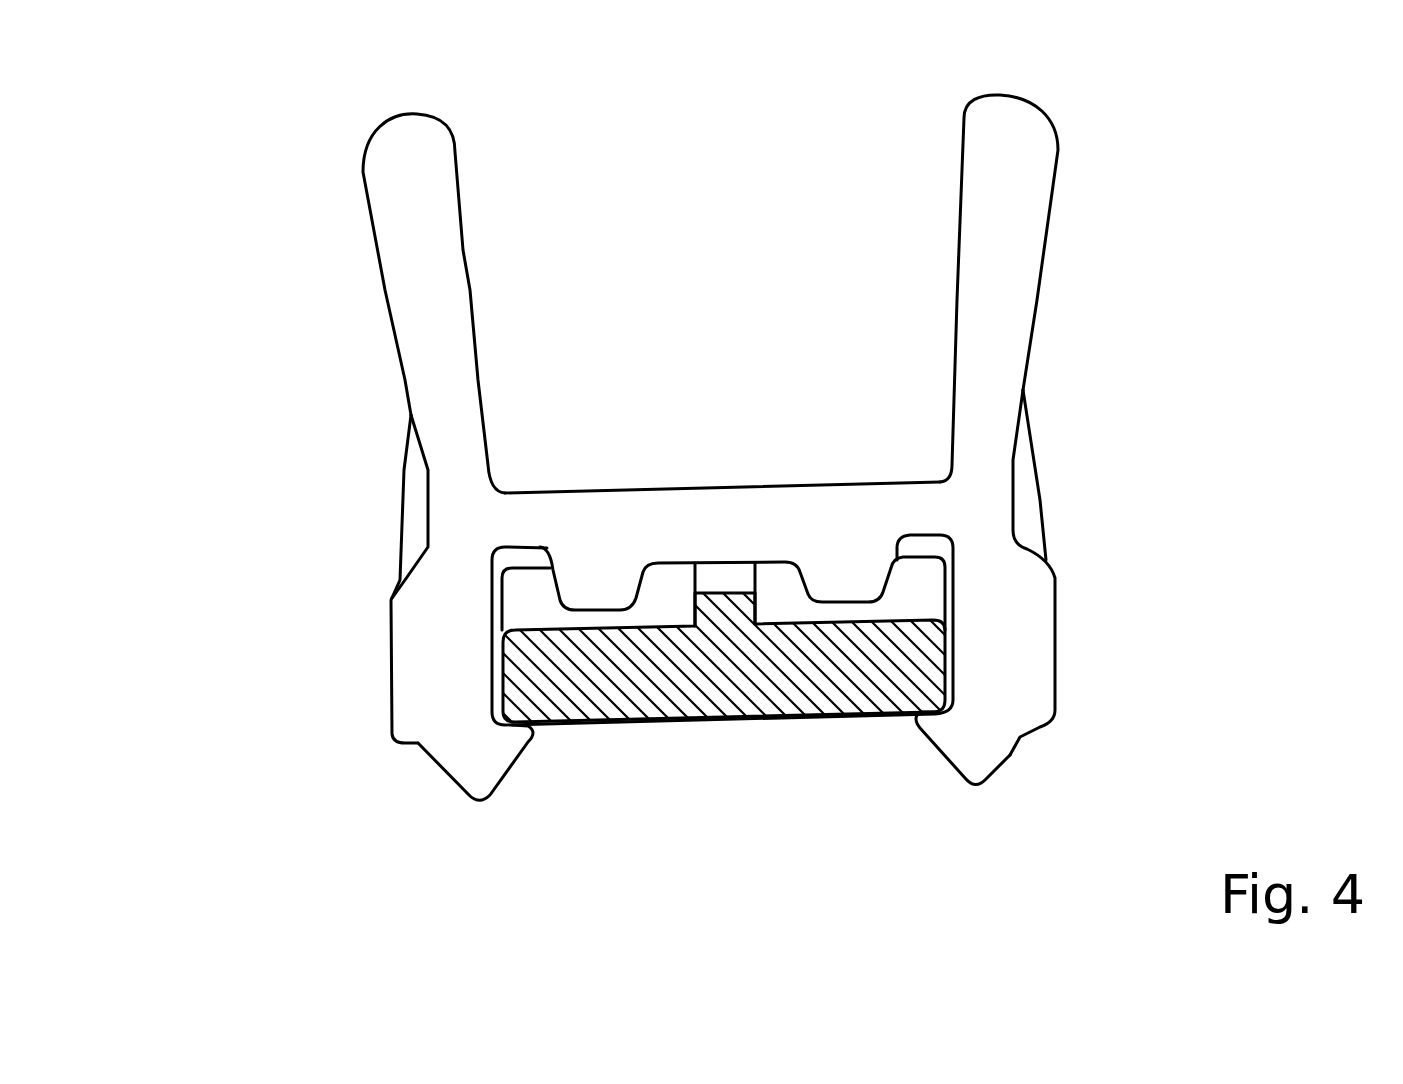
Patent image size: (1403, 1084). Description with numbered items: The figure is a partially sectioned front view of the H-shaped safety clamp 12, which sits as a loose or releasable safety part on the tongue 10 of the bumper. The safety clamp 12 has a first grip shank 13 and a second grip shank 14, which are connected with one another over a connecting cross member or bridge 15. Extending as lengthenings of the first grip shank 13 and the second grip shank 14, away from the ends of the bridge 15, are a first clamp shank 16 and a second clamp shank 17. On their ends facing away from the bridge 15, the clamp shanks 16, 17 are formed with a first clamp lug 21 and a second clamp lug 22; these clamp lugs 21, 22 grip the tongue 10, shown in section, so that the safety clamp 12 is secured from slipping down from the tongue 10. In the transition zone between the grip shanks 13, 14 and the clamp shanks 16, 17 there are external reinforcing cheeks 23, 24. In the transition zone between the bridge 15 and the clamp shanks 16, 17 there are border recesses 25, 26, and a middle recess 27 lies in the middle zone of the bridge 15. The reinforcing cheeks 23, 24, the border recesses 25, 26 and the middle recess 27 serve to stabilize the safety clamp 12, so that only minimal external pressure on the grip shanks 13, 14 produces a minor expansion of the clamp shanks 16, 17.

The tongue 10 is at (710, 673).
The safety clamp 12 is at (703, 392).
The first grip shank 13 is at (412, 210).
The second grip shank 14 is at (1025, 191).
The bridge 15 is at (880, 510).
The first clamp shank 16 is at (440, 636).
The second clamp shank 17 is at (1012, 637).
The first clamp lug 21 is at (513, 742).
The second clamp lug 22 is at (937, 732).
The reinforcing cheek 23 is at (413, 515).
The reinforcing cheek 24 is at (1027, 502).
The border recess 25 is at (520, 608).
The border recess 26 is at (917, 592).
The middle recess 27 is at (674, 606).